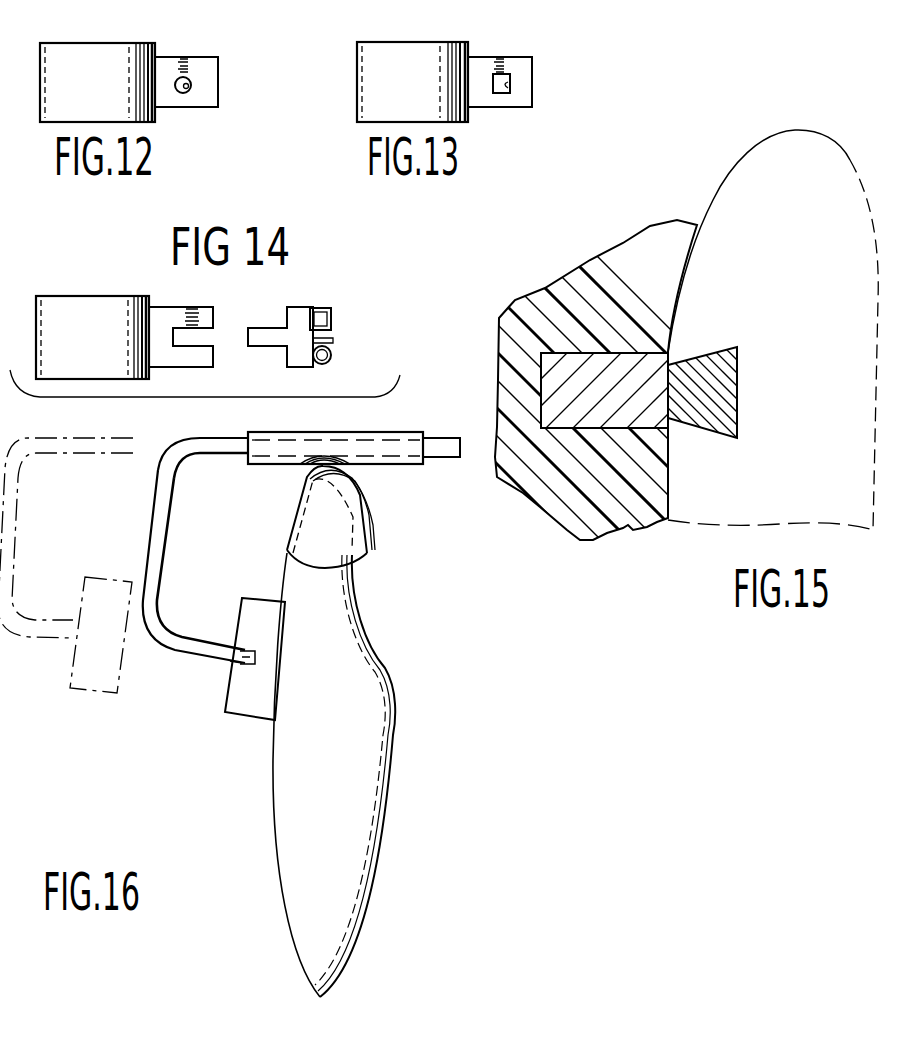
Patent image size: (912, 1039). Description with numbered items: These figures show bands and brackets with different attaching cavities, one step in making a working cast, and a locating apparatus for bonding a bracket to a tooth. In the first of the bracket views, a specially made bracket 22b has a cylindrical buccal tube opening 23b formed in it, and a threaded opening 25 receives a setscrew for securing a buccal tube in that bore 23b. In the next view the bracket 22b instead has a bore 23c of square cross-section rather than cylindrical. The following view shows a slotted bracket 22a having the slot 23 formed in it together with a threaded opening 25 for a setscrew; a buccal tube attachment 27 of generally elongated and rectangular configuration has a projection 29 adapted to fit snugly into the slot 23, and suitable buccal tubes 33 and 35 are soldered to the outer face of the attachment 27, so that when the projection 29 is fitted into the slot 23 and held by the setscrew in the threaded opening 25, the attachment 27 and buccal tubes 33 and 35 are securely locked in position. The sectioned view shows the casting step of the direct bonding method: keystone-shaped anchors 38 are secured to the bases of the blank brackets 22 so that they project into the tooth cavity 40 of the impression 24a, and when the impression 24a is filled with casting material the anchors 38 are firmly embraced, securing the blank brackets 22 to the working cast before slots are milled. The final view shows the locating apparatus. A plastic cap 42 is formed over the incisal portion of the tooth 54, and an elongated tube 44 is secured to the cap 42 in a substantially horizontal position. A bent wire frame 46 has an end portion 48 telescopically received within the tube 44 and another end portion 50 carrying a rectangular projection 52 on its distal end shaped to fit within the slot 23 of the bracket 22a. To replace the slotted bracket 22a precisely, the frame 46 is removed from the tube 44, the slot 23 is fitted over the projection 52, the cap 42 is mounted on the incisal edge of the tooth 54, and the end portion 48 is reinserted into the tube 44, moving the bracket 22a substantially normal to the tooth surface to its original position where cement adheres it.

In FIG. 15, the blank bracket 22 is at (575, 360).
In FIG. 14, the slotted bracket 22a is at (170, 307).
In FIG. 12, the specially made bracket 22b is at (211, 57).
In FIG. 13, the specially made bracket 22b is at (520, 57).
In FIG. 14, the slot 23 is at (204, 368).
In FIG. 16, the slot 23 is at (232, 668).
In FIG. 12, the buccal tube opening 23b is at (188, 87).
In FIG. 13, the bore 23c is at (509, 87).
In FIG. 15, the impression 24a is at (651, 226).
In FIG. 12, the threaded opening 25 is at (184, 58).
In FIG. 13, the threaded opening 25 is at (500, 58).
In FIG. 14, the threaded opening 25 is at (215, 318).
In FIG. 14, the buccal tube attachment 27 is at (303, 307).
In FIG. 14, the projection 29 is at (272, 347).
In FIG. 14, the buccal tube 33 is at (333, 318).
In FIG. 14, the buccal tube 35 is at (334, 352).
In FIG. 15, the keystone-shaped anchor 38 is at (719, 349).
In FIG. 15, the tooth cavity 40 is at (869, 205).
In FIG. 16, the plastic cap 42 is at (362, 515).
In FIG. 16, the elongated tube 44 is at (357, 432).
In FIG. 16, the bent wire frame 46 is at (165, 543).
In FIG. 16, the end portion 48 is at (228, 440).
In FIG. 16, the end portion 50 is at (42, 621).
In FIG. 16, the rectangular projection 52 is at (256, 657).
In FIG. 16, the tooth 54 is at (395, 730).